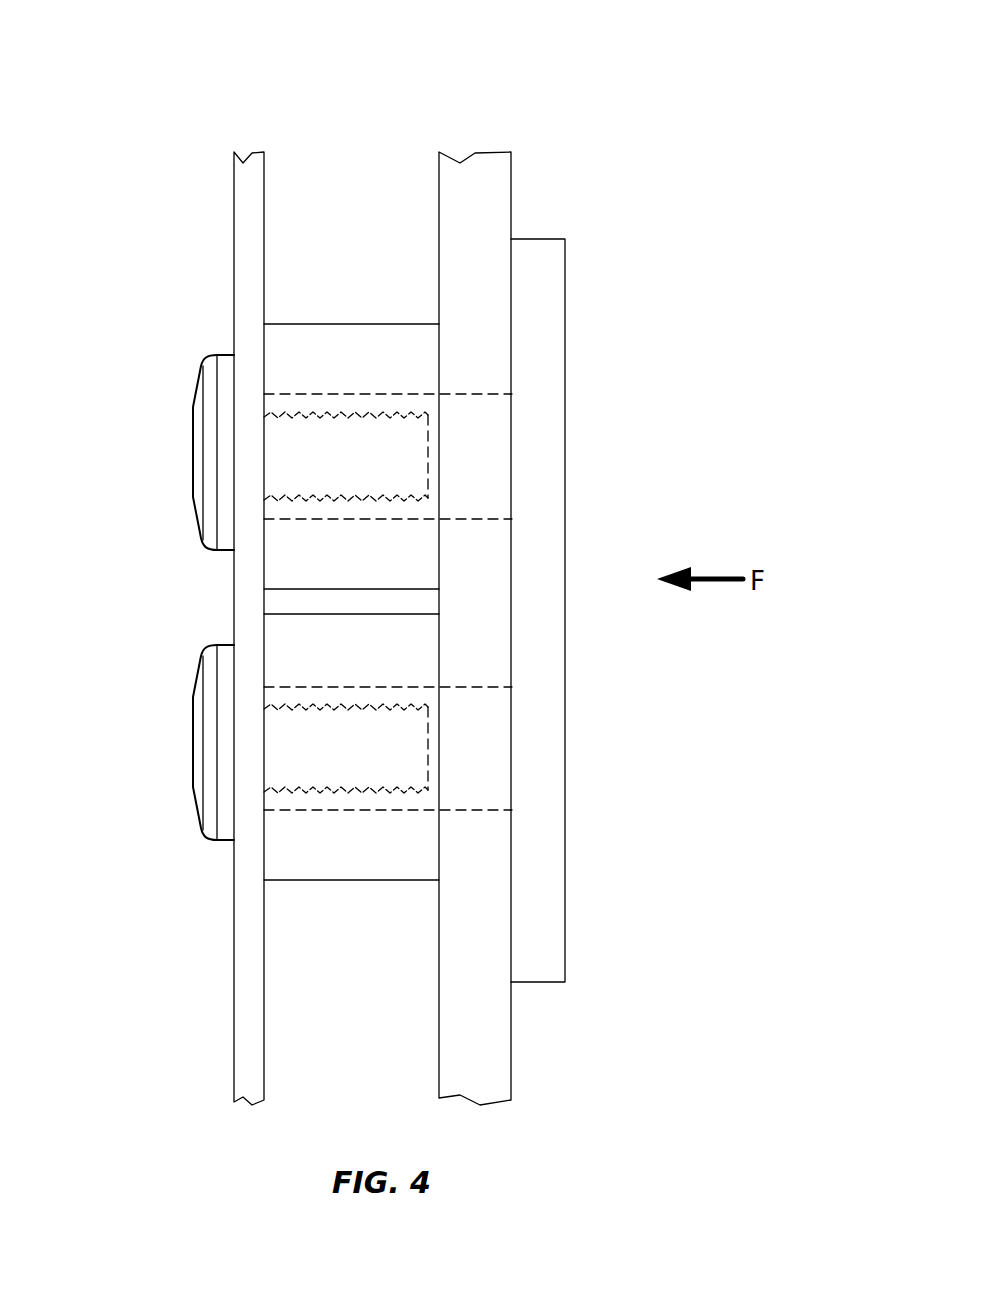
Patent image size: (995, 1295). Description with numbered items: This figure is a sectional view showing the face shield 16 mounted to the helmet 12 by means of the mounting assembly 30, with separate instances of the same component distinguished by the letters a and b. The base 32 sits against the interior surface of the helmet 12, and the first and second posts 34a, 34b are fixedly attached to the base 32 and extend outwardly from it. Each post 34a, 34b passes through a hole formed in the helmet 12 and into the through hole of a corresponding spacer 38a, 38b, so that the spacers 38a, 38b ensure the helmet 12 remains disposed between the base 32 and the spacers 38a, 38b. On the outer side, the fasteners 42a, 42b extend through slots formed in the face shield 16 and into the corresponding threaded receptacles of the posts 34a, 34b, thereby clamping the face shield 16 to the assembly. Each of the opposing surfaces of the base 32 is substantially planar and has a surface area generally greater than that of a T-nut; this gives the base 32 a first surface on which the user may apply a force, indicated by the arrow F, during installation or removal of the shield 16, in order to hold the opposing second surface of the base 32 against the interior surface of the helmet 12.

The mounting assembly 30 is at (599, 84).
The helmet 12 is at (492, 210).
The face shield 16 is at (247, 235).
The base 32 is at (543, 419).
The first post 34a is at (408, 394).
The second post 34b is at (402, 687).
The first spacer 38a is at (372, 343).
The second spacer 38b is at (328, 865).
The first fastener 42a is at (203, 407).
The second fastener 42b is at (203, 690).